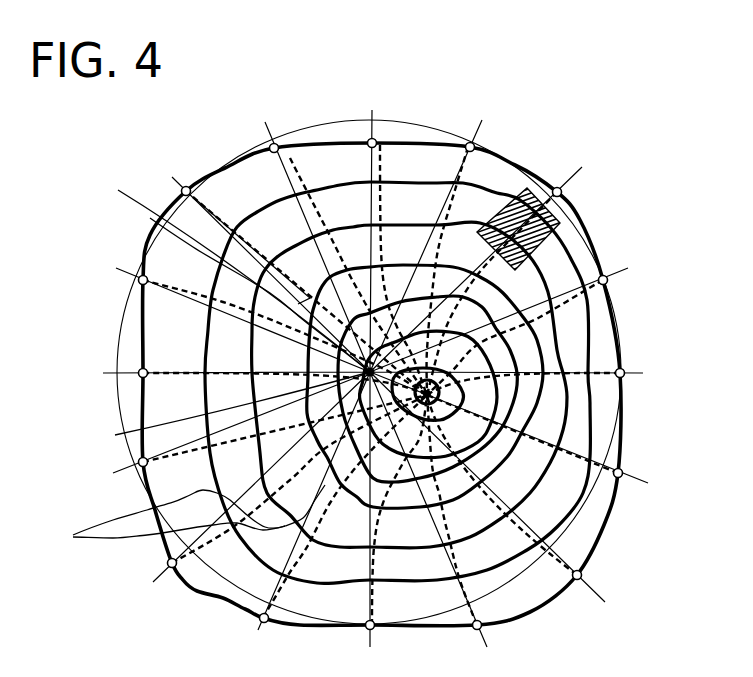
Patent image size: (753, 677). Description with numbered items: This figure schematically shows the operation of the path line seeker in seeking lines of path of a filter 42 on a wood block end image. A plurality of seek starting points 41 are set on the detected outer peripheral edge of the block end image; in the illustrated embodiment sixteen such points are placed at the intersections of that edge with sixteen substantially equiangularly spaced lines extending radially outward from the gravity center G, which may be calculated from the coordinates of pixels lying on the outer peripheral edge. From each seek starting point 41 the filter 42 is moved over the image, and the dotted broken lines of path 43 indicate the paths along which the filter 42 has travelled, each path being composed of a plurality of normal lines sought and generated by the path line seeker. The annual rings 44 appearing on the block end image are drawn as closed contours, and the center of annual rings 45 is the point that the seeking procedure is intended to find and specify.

The seek starting points 41 is at (620, 478).
The filter 42 is at (570, 210).
The broken lines of path 43 is at (225, 275).
The annual rings 44 is at (182, 519).
The center of annual rings 45 is at (228, 415).
The gravity center G is at (370, 372).